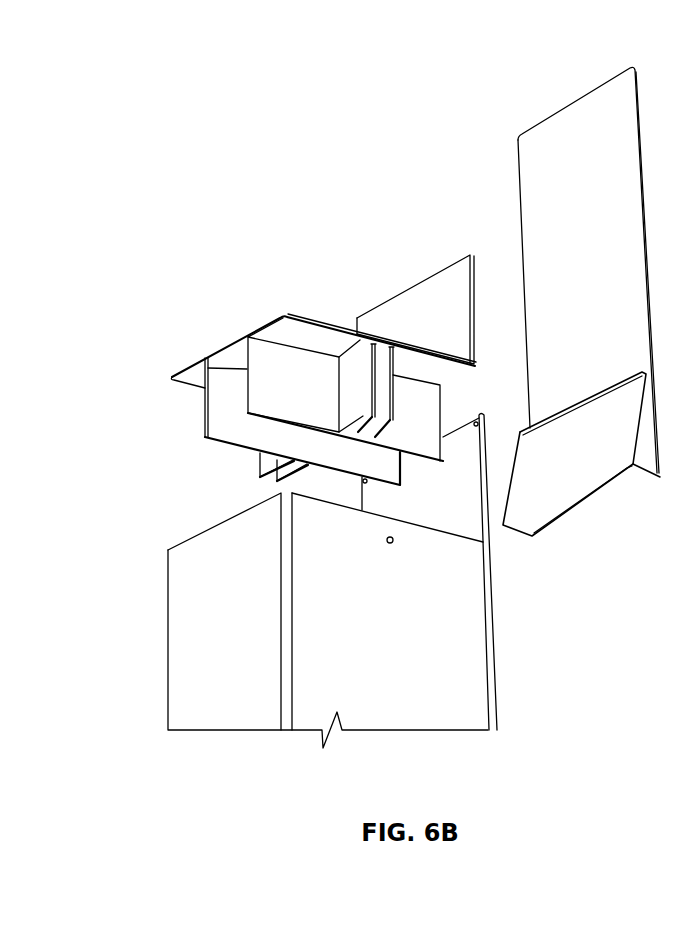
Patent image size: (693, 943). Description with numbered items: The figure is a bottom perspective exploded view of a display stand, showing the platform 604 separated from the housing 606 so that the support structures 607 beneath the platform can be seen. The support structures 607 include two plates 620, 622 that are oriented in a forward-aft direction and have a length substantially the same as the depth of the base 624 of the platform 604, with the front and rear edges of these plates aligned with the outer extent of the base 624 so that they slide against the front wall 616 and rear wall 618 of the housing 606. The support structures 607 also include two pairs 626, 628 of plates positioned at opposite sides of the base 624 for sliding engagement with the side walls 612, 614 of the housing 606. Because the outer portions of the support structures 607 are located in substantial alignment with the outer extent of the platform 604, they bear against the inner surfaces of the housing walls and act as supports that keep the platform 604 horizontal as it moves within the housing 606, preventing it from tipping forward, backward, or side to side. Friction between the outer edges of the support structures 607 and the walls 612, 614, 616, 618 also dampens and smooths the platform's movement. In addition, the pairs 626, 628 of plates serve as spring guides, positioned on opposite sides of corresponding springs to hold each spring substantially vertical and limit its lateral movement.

The platform 604 is at (416, 231).
The housing 606 is at (330, 588).
The support structures 607 is at (300, 375).
The side wall 612 is at (335, 588).
The side wall 614 is at (365, 718).
The front wall 616 is at (181, 632).
The rear wall 618 is at (507, 622).
The plate 620 is at (201, 402).
The plate 622 is at (292, 353).
The base 624 is at (283, 317).
The pair of plates 626 is at (249, 458).
The pair of plates 628 is at (399, 413).